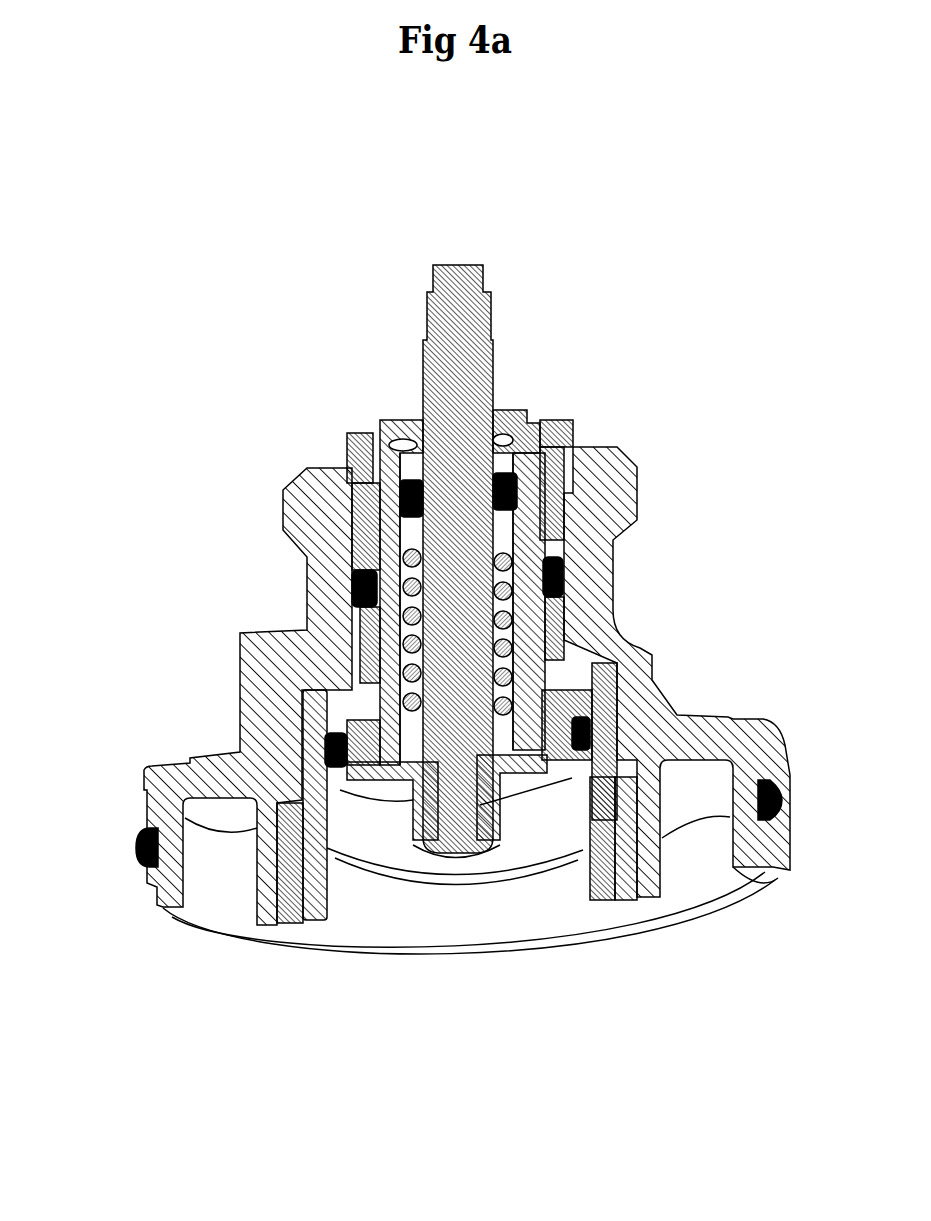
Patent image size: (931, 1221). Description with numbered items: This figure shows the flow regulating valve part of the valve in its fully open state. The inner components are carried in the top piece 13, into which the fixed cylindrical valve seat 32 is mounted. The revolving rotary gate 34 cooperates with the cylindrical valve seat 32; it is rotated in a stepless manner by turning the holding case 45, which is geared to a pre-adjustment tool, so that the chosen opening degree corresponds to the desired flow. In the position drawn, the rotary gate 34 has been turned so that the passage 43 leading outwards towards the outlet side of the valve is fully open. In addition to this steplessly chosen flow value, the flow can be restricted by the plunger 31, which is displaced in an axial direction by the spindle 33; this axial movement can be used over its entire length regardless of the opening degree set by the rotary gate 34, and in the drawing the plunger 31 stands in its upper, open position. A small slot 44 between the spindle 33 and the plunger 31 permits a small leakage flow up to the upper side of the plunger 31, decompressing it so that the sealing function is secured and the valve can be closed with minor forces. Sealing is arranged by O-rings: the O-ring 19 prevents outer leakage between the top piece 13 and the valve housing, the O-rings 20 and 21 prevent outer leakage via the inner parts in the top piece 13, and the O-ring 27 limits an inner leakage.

The top piece 13 is at (617, 553).
The O-ring 19 is at (140, 838).
The O-ring 20 is at (347, 587).
The O-ring 21 is at (340, 467).
The O-ring 27 is at (330, 750).
The plunger 31 is at (548, 795).
The cylindrical valve seat 32 is at (293, 893).
The spindle 33 is at (487, 343).
The rotary gate 34 is at (600, 653).
The passage 43 is at (457, 898).
The slot for leakage flow 44 is at (497, 852).
The holding case 45 is at (537, 410).